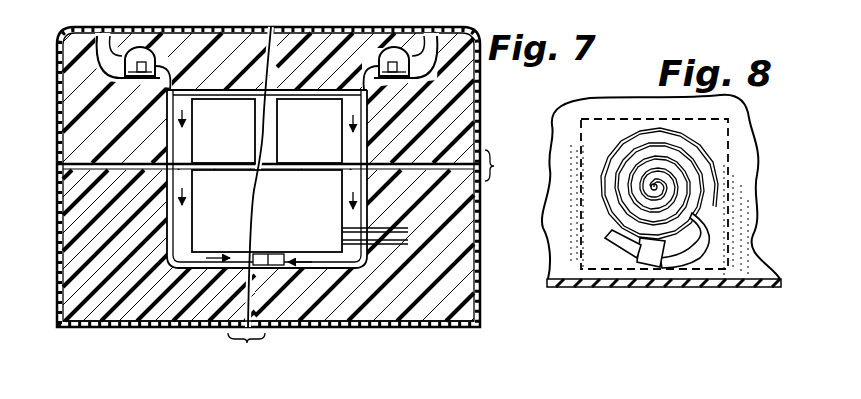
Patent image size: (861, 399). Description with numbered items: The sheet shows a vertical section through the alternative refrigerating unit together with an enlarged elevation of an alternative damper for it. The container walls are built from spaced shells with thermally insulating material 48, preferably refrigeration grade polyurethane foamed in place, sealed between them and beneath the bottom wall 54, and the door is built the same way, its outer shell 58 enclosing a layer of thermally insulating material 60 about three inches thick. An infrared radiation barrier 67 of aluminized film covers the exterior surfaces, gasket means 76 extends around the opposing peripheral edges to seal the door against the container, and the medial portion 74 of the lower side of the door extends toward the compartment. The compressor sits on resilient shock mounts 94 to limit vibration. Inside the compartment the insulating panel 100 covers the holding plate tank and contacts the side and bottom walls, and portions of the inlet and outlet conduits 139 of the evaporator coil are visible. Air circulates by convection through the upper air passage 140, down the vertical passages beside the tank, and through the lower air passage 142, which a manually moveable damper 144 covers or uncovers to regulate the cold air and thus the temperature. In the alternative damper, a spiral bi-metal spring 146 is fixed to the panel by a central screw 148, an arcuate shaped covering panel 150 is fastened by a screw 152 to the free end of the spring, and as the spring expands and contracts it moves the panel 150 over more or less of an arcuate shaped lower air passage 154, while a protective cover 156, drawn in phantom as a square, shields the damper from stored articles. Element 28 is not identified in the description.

In FIG. 7, the lid 28 is at (80, 8).
In FIG. 7, the thermally insulating material 48 is at (87, 128).
In FIG. 7, the bottom wall 54 is at (320, 267).
In FIG. 8, the bottom wall 54 is at (556, 283).
In FIG. 7, the outer shell 58 is at (430, 33).
In FIG. 7, the thermally insulating material 60 is at (233, 68).
In FIG. 7, the infrared radiation barrier 67 is at (143, 327).
In FIG. 7, the medial portion 74 is at (256, 103).
In FIG. 7, the gasket means 76 is at (160, 62).
In FIG. 7, the resilient shock mounts 94 is at (87, 9).
In FIG. 7, the insulating panel 100 is at (185, 226).
In FIG. 7, the inlet and outlet conduits 139 is at (408, 230).
In FIG. 7, the upper air passage 140 is at (308, 102).
In FIG. 7, the lower air passage 142 is at (283, 266).
In FIG. 7, the damper 144 is at (248, 268).
In FIG. 8, the spiral bi-metal spring 146 is at (622, 147).
In FIG. 8, the central screw 148 is at (650, 187).
In FIG. 8, the arcuate shaped covering panel 150 is at (643, 260).
In FIG. 8, the screw 152 is at (660, 265).
In FIG. 8, the arcuate shaped lower air passage 154 is at (623, 248).
In FIG. 8, the protective cover 156 is at (728, 133).